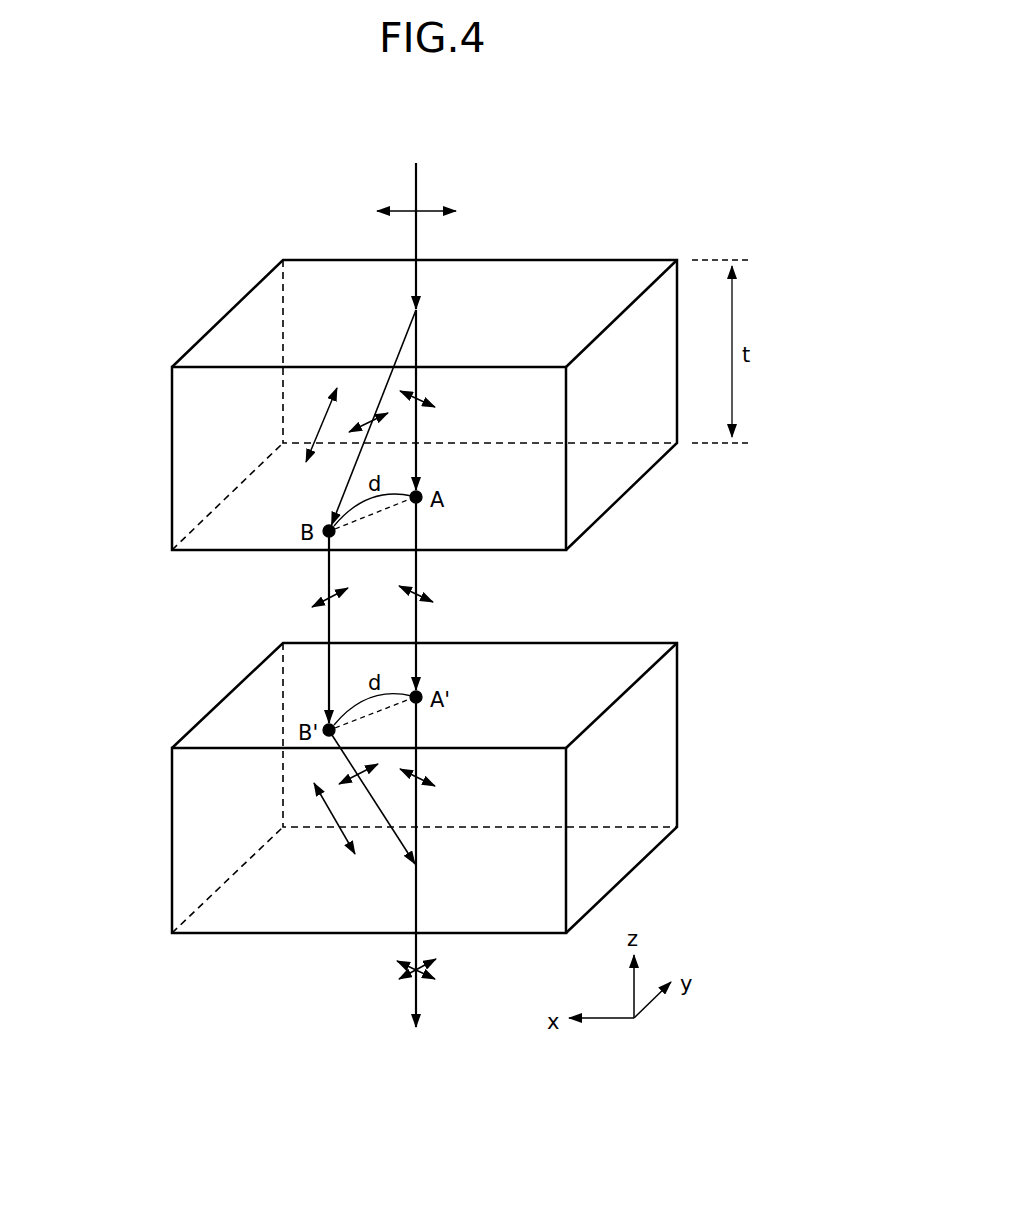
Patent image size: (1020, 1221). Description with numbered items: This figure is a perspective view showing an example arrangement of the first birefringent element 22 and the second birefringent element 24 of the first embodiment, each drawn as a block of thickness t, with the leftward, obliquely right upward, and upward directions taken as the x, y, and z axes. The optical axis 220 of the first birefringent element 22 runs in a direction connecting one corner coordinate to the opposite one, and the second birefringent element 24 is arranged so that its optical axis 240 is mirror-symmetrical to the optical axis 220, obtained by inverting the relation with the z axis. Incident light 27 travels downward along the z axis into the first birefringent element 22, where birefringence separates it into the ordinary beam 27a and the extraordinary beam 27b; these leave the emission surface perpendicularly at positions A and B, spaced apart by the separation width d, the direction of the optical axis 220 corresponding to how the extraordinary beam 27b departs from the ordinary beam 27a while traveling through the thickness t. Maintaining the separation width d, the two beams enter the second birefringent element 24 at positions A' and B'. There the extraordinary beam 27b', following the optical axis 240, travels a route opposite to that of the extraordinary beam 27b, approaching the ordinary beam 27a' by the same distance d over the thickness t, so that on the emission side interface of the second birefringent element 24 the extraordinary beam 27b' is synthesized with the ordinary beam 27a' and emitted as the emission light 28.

The first birefringent element 22 is at (232, 308).
The second birefringent element 24 is at (232, 690).
The incident light 27 is at (418, 181).
The optical axis 220 is at (327, 407).
The optical axis 240 is at (330, 815).
The ordinary beam 27a is at (460, 400).
The extraordinary beam 27b is at (339, 516).
The ordinary beam 27a' is at (462, 684).
The extraordinary beam 27b' is at (373, 819).
The emission light 28 is at (415, 996).